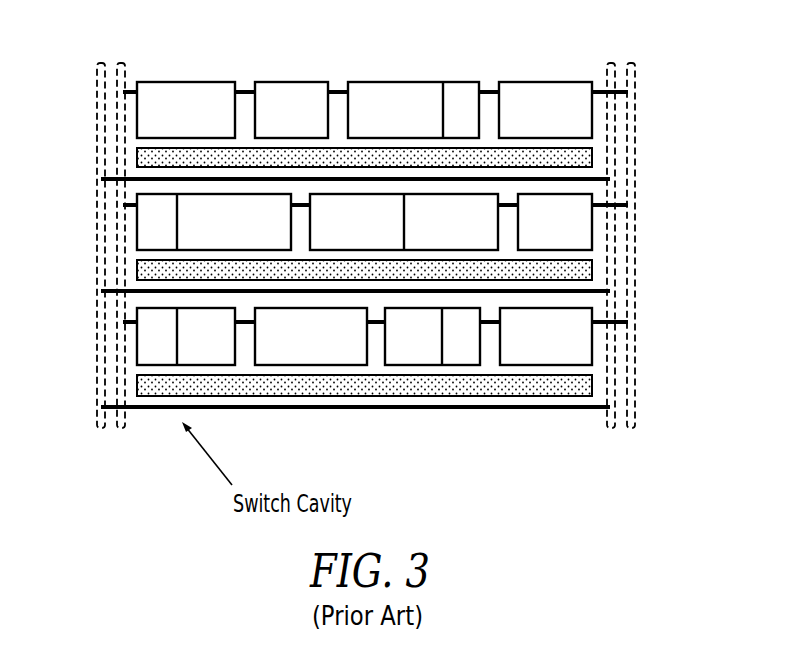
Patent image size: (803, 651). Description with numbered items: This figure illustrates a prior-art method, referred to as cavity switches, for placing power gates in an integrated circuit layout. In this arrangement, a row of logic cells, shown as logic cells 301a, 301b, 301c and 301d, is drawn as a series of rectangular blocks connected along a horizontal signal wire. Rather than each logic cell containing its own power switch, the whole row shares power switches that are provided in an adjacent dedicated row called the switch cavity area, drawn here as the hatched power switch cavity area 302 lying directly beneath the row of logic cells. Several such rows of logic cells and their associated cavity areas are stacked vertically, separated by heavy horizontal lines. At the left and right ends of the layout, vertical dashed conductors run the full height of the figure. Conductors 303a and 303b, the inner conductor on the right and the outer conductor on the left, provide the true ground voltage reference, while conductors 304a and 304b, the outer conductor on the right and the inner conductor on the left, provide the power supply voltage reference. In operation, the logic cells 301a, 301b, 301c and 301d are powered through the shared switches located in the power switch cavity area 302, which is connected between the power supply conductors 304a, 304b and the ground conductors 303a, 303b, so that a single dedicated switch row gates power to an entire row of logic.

The logic cell 301a is at (207, 82).
The logic cell 301b is at (302, 82).
The logic cell 301c is at (404, 82).
The logic cell 301d is at (556, 82).
The power switch cavity area 302 is at (592, 157).
The conductor 303a is at (607, 426).
The conductor 303b is at (97, 413).
The conductor 304a is at (635, 413).
The conductor 304b is at (125, 425).